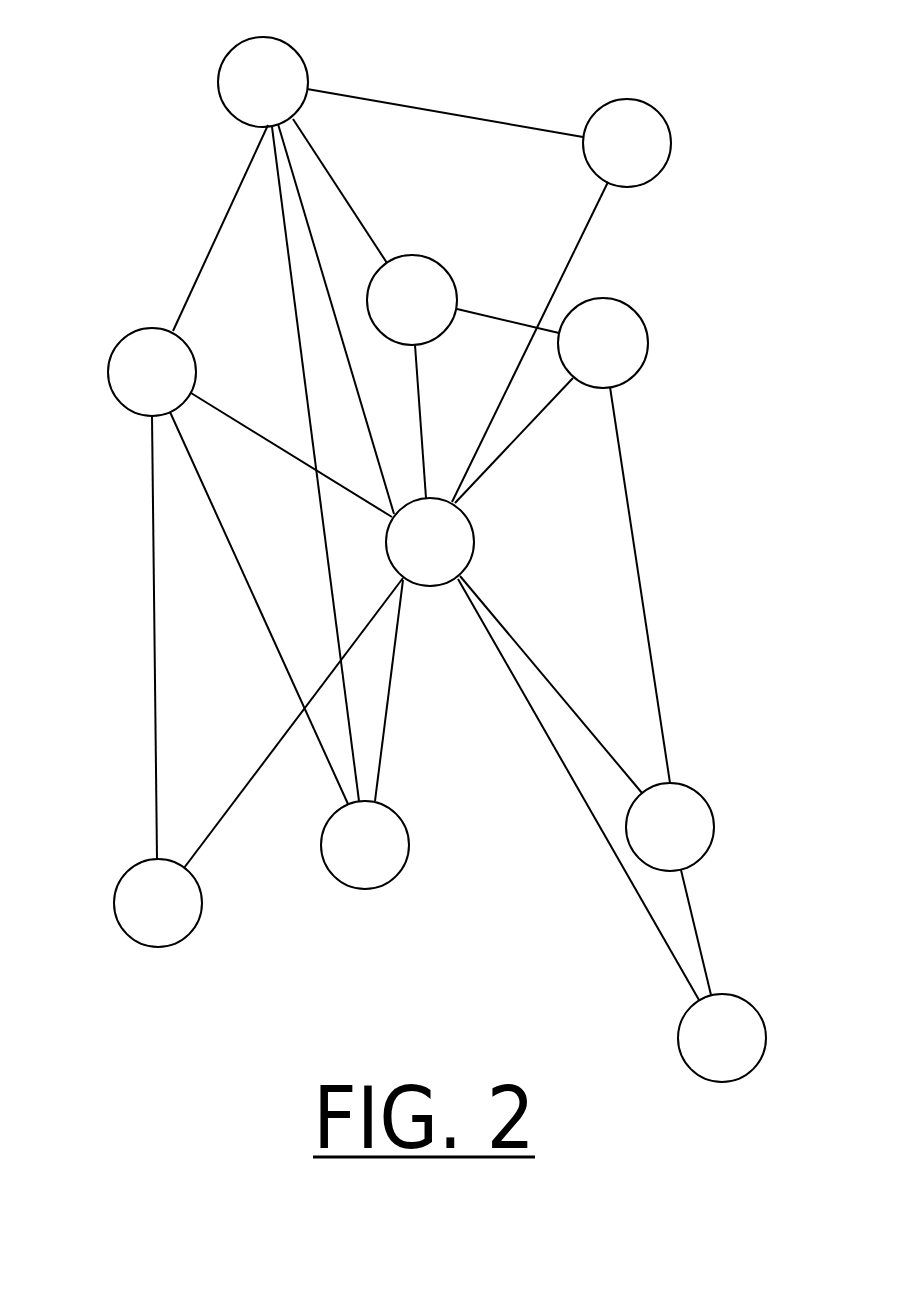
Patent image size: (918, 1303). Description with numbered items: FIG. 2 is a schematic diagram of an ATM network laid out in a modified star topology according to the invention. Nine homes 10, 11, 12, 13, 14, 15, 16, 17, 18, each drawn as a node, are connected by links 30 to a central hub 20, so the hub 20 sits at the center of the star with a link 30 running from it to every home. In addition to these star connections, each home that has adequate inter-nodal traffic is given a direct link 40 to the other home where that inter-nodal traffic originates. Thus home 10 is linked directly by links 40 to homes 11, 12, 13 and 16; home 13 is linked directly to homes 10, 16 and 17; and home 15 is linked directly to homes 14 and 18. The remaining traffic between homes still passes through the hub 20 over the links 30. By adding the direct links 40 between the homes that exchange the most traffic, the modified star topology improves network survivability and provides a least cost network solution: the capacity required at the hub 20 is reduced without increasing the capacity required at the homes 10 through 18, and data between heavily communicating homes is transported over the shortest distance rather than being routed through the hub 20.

The home 10 is at (258, 38).
The home 11 is at (628, 108).
The home 12 is at (423, 257).
The home 13 is at (175, 335).
The home 14 is at (615, 303).
The home 15 is at (683, 783).
The home 16 is at (385, 818).
The home 17 is at (201, 887).
The home 18 is at (725, 993).
The hub 20 is at (450, 546).
The link 30 is at (588, 236).
The direct link 40 is at (385, 100).